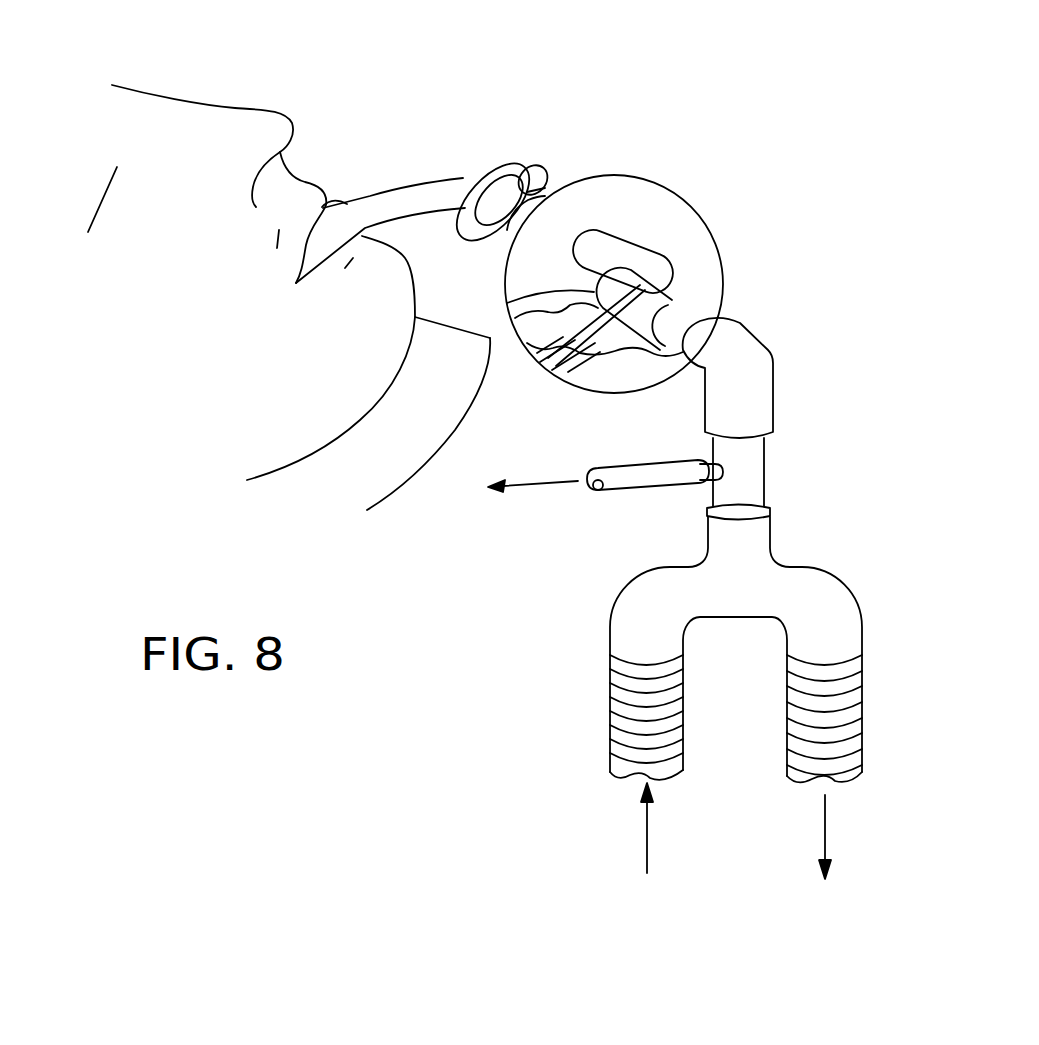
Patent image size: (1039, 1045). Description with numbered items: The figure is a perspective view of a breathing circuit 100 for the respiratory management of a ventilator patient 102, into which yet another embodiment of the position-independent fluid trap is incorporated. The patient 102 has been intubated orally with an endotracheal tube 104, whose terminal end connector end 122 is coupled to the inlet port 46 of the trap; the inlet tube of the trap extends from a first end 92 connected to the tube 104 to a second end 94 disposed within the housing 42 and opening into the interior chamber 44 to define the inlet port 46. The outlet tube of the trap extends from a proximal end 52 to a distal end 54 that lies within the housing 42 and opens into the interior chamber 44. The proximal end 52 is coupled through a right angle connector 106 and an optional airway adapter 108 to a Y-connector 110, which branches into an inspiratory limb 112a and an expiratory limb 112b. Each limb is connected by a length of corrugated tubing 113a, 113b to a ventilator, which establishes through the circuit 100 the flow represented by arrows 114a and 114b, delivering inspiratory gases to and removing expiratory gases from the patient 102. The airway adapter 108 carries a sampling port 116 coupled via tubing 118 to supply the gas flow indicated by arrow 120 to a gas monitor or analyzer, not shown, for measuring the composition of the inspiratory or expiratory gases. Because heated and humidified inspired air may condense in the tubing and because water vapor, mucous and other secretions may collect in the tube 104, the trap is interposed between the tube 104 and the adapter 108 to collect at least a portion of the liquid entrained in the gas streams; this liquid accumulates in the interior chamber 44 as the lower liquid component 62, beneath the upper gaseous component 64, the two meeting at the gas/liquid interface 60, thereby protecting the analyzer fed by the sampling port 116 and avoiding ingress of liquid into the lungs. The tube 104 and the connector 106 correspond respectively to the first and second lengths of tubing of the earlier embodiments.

The housing 42 is at (643, 172).
The interior chamber 44 is at (560, 282).
The inlet port 46 is at (673, 268).
The proximal end 52 is at (693, 317).
The distal end 54 is at (507, 302).
The gas/liquid interface 60 is at (535, 362).
The liquid fluid component 62 is at (620, 373).
The gaseous fluid component 64 is at (615, 220).
The first end 92 is at (545, 195).
The second end 94 is at (665, 253).
The breathing circuit 100 is at (701, 76).
The ventilator patient 102 is at (236, 108).
The endotracheal (ET) tube 104 is at (432, 193).
The right angle connector 106 is at (755, 368).
The airway adapter 108 is at (758, 467).
The Y-connector 110 is at (800, 577).
The inspiratory limb 112a is at (627, 615).
The expiratory limb 112b is at (847, 628).
The corrugated tubing 113a is at (610, 693).
The corrugated tubing 113b is at (862, 692).
The inspiratory flow arrow 114a is at (647, 830).
The expiratory flow arrow 114b is at (825, 818).
The sampling port 116 is at (707, 464).
The tubing 118 is at (623, 473).
The gas flow arrow 120 is at (533, 487).
The terminal end connector end 122 is at (543, 163).